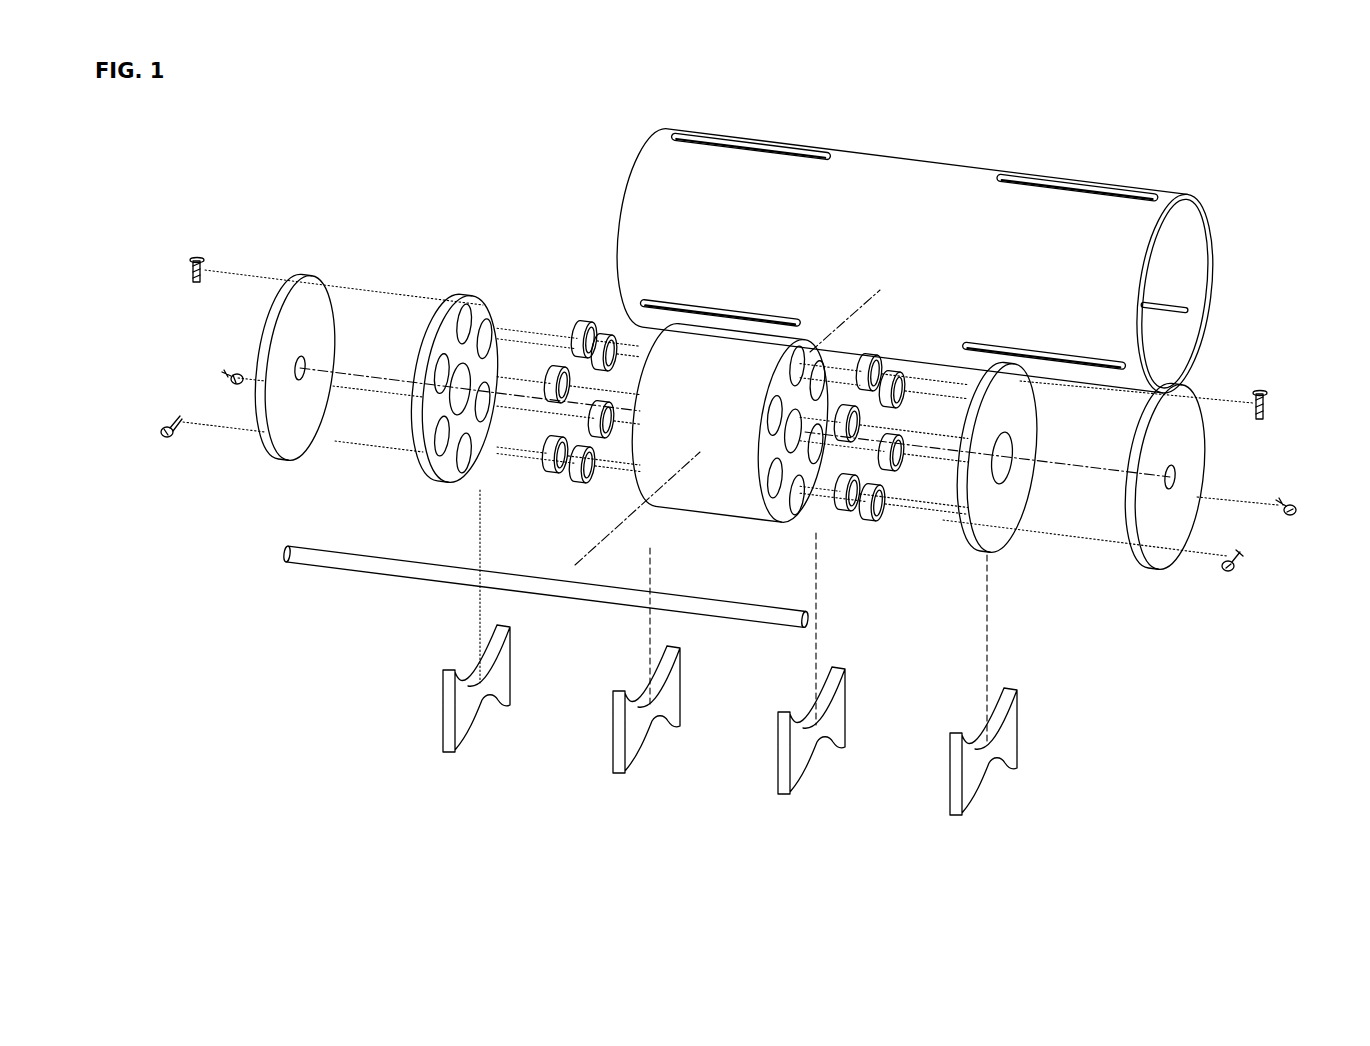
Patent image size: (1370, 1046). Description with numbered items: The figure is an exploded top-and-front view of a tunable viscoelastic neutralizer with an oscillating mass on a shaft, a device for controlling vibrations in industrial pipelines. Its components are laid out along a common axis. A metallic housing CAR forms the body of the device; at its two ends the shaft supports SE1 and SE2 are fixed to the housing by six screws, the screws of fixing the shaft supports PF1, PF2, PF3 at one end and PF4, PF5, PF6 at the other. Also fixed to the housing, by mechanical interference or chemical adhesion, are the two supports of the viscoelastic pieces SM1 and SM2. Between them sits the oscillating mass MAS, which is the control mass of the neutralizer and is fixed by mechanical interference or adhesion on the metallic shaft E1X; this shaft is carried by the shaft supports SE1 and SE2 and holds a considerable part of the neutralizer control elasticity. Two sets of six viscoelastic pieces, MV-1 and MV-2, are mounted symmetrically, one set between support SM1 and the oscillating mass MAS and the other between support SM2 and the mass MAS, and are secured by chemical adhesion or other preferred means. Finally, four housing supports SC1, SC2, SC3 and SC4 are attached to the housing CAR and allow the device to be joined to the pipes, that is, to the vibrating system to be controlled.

The housing CAR is at (877, 172).
The shaft support SE1 is at (297, 278).
The support of the viscoelastic pieces SM1 is at (462, 297).
The screw of fixing the shaft supports PF1 is at (194, 262).
The screw of fixing the shaft supports PF2 is at (222, 372).
The screw of fixing the shaft supports PF3 is at (168, 433).
The viscoelastic pieces MV-1 is at (612, 340).
The oscillating mass MAS is at (725, 493).
The viscoelastic pieces MV-2 is at (885, 372).
The support of the viscoelastic pieces SM2 is at (998, 550).
The shaft support SE2 is at (1160, 570).
The screw of fixing the shaft supports PF4 is at (1261, 421).
The screw of fixing the shaft supports PF5 is at (1292, 515).
The screw of fixing the shaft supports PF6 is at (1232, 570).
The shaft E1X is at (317, 558).
The housing support SC1 is at (443, 755).
The housing support SC2 is at (613, 775).
The housing support SC3 is at (778, 797).
The housing support SC4 is at (950, 818).